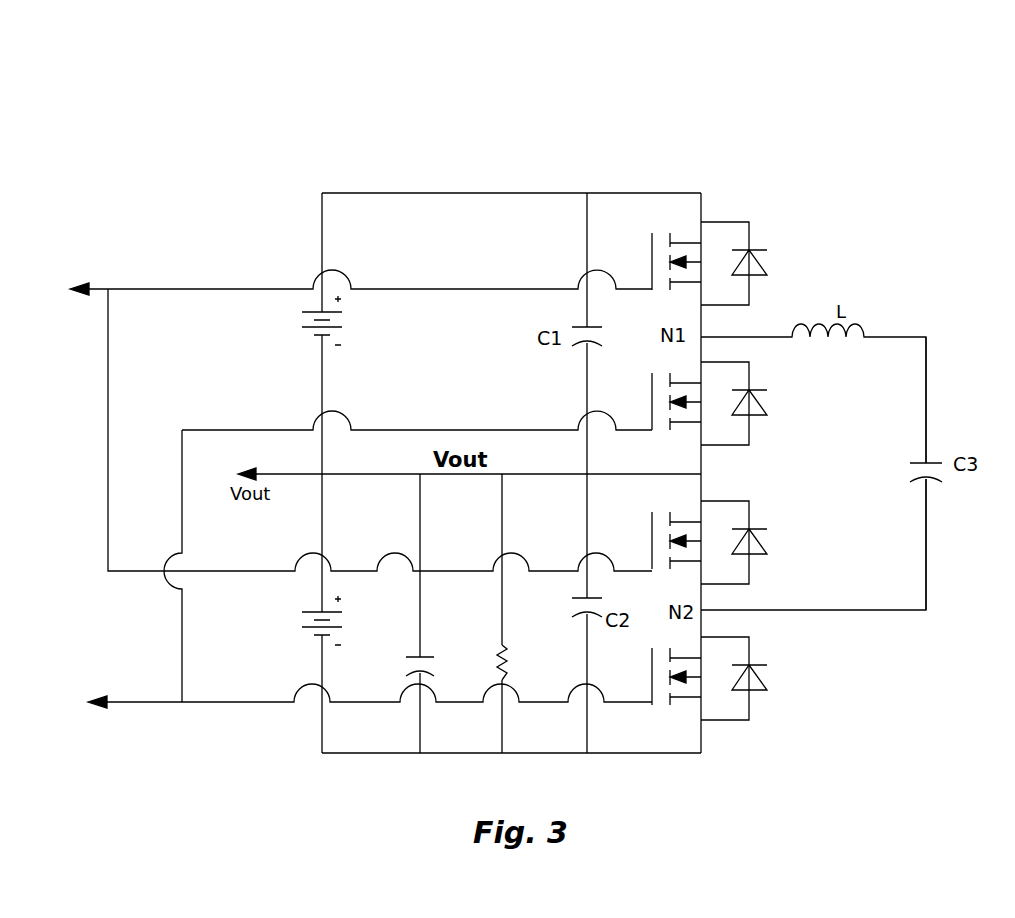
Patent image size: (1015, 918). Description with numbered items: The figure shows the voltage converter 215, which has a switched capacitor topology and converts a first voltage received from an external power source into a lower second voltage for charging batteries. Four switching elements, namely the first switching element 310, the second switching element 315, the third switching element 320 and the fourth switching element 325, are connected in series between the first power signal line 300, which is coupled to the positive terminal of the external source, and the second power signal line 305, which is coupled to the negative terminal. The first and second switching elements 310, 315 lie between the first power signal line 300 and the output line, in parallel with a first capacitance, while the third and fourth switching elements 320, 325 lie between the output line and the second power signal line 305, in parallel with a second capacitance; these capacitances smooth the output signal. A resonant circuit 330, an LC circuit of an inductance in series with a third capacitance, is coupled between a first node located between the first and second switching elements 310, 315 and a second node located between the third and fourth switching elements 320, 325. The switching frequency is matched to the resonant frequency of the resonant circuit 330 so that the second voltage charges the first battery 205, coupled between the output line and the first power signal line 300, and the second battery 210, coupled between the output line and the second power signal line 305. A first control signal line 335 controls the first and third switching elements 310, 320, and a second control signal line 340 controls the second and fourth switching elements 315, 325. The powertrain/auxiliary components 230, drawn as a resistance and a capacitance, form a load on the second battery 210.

The voltage converter 215 is at (763, 100).
The first power signal line 300 is at (511, 175).
The second power signal line 305 is at (511, 769).
The first switching element 310 is at (731, 263).
The second switching element 315 is at (731, 403).
The third switching element 320 is at (731, 542).
The fourth switching element 325 is at (731, 678).
The resonant circuit 330 is at (953, 473).
The first control signal line 335 is at (361, 278).
The second control signal line 340 is at (357, 688).
The first battery 205 is at (297, 323).
The second battery 210 is at (298, 620).
The powertrain/auxiliary components 230 is at (456, 651).